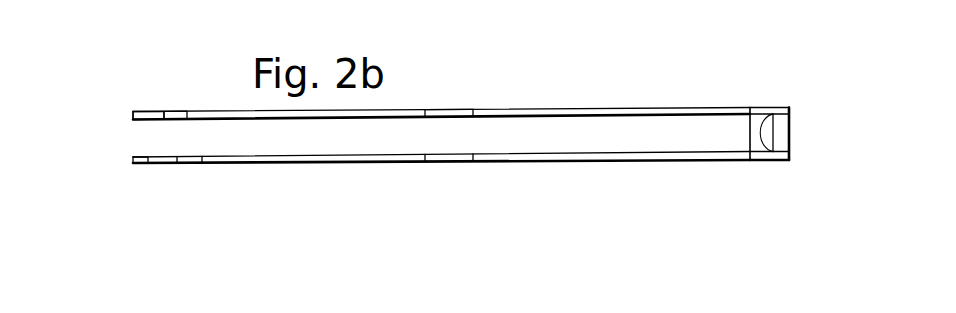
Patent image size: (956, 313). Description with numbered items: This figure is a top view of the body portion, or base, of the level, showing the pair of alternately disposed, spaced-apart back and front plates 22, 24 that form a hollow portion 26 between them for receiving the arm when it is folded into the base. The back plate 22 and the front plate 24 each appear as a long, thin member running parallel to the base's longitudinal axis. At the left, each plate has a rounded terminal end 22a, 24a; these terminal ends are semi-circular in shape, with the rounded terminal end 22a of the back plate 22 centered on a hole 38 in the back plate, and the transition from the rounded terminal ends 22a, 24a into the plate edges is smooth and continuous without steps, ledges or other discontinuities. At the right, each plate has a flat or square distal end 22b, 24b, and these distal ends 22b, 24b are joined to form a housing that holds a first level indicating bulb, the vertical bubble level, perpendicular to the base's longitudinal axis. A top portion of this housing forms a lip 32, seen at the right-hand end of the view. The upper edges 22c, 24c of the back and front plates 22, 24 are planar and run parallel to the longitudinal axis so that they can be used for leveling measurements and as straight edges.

The back plate 22 is at (496, 106).
The rounded terminal end 22a is at (128, 110).
The flat distal end 22b is at (791, 106).
The upper edge 22c is at (593, 106).
The front plate 24 is at (504, 163).
The rounded terminal end 24a is at (127, 161).
The flat distal end 24b is at (770, 162).
The upper edge 24c is at (639, 161).
The hollow portion 26 is at (456, 127).
The lip 32 is at (791, 134).
The hole 38 is at (177, 107).